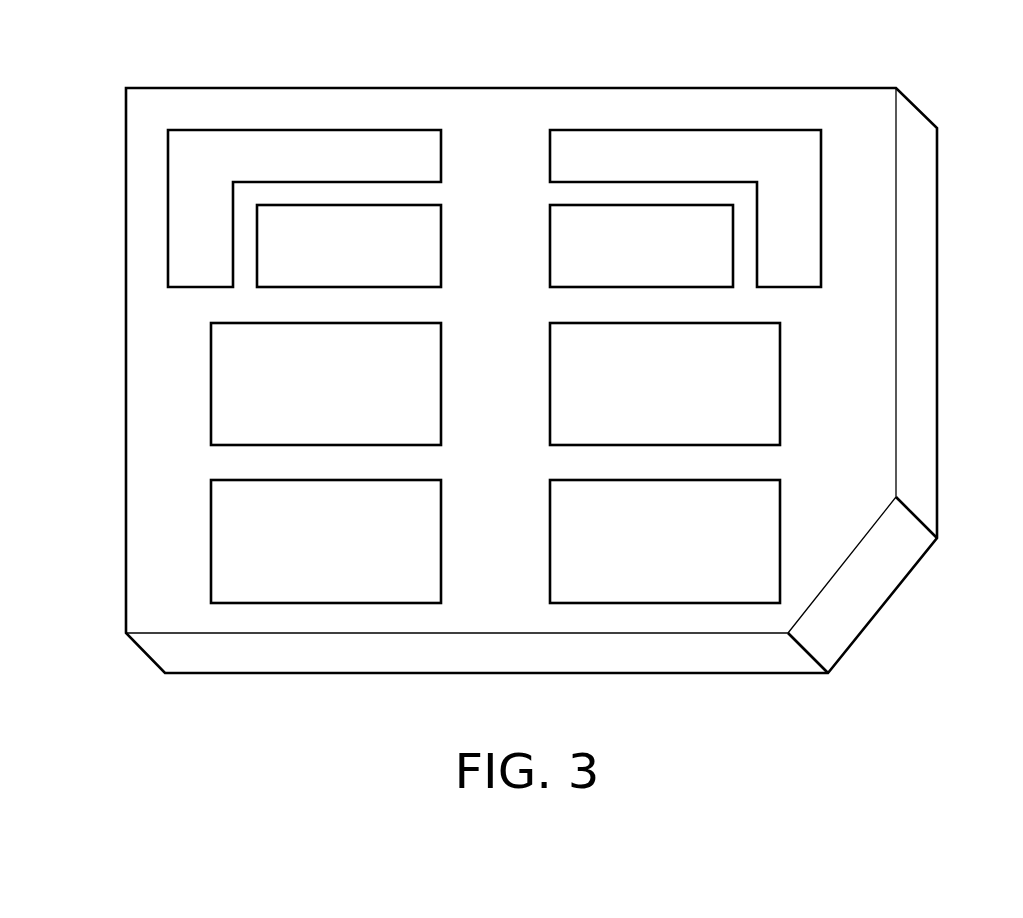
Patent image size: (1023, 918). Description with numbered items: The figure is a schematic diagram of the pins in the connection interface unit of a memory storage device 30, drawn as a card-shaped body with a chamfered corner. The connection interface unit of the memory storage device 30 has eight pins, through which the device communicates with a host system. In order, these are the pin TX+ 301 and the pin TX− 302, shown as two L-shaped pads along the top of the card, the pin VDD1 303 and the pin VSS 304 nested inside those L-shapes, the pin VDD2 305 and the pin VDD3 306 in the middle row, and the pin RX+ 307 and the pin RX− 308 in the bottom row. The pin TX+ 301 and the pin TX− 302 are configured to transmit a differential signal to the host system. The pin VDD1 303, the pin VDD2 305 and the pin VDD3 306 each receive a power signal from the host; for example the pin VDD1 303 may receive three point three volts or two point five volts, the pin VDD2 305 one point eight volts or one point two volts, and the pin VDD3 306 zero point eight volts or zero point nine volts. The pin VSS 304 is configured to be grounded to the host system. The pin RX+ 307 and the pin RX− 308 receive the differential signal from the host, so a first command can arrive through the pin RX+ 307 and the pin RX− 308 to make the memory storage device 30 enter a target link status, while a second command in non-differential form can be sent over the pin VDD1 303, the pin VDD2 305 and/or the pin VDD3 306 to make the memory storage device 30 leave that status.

The memory storage device 30 is at (848, 86).
The pin TX+ 301 is at (303, 128).
The pin TX− 302 is at (692, 128).
The pin VDD1 303 is at (442, 245).
The pin VSS 304 is at (550, 245).
The pin VDD2 305 is at (211, 381).
The pin VDD3 306 is at (780, 383).
The pin RX+ 307 is at (325, 604).
The pin RX− 308 is at (671, 604).